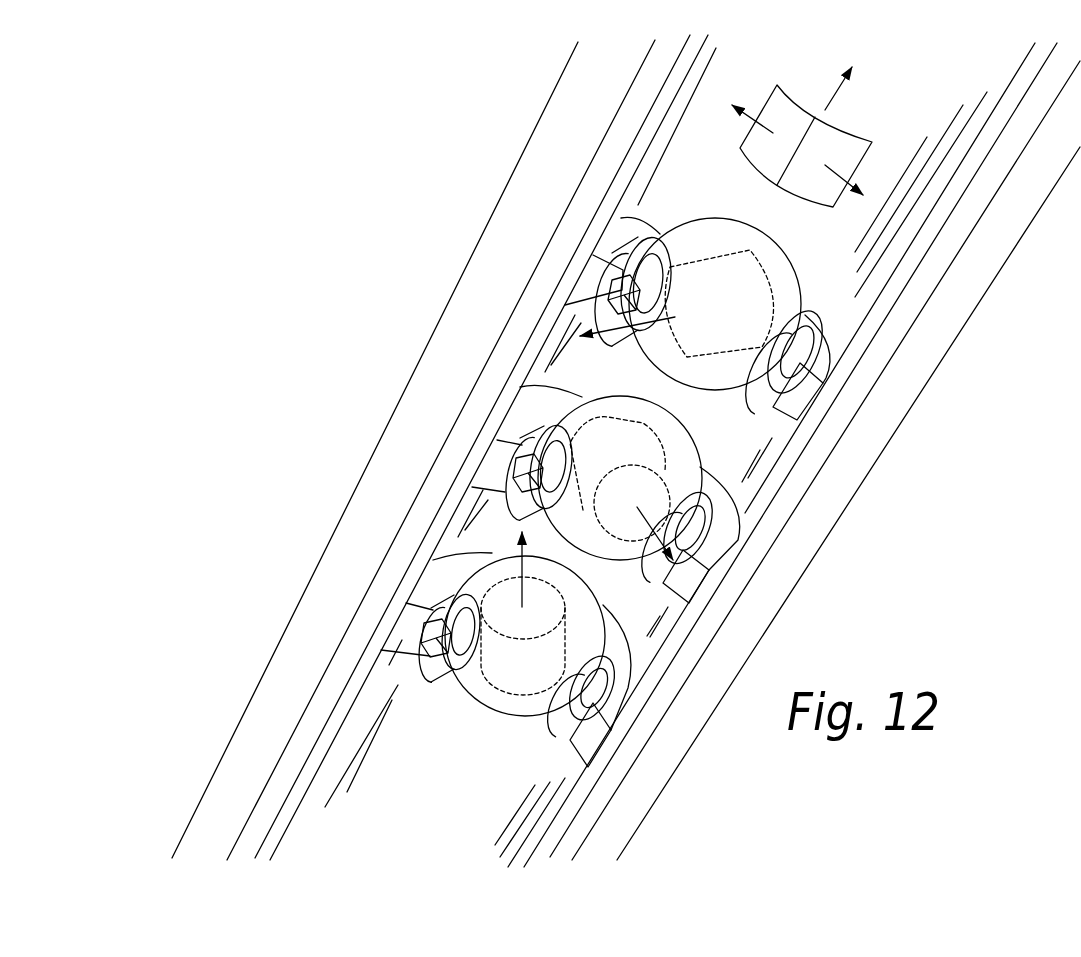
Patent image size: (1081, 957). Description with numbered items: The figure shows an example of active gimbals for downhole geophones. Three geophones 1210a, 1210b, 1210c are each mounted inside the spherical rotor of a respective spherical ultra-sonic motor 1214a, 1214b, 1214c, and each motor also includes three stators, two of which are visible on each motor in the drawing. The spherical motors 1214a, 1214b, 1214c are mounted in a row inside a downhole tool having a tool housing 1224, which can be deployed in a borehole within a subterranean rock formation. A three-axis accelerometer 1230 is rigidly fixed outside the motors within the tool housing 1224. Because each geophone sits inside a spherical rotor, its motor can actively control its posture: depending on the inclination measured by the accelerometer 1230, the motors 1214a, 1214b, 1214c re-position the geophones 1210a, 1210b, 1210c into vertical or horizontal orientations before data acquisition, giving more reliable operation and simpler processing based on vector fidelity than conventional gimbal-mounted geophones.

The tool housing 1224 is at (468, 313).
The 3-axis accelerometer 1230 is at (837, 108).
The spherical ultra-sonic motor 1214a is at (515, 730).
The spherical ultra-sonic motor 1214b is at (683, 403).
The spherical ultra-sonic motor 1214c is at (668, 211).
The geophone 1210a is at (562, 672).
The geophone 1210b is at (645, 461).
The geophone 1210c is at (770, 314).